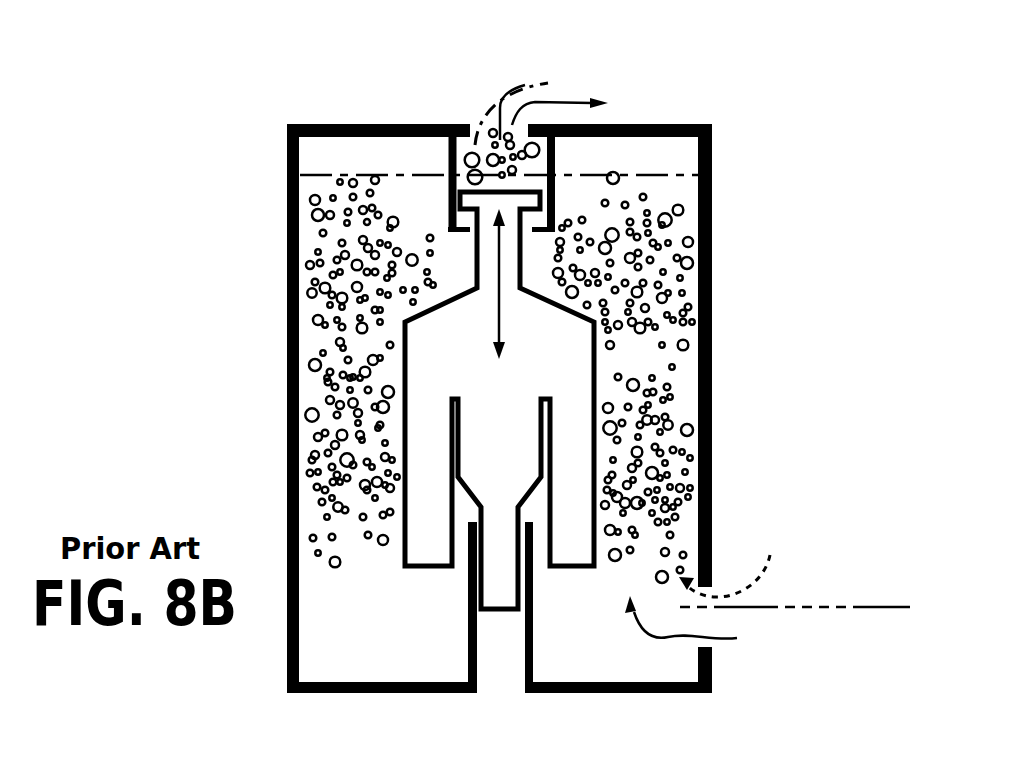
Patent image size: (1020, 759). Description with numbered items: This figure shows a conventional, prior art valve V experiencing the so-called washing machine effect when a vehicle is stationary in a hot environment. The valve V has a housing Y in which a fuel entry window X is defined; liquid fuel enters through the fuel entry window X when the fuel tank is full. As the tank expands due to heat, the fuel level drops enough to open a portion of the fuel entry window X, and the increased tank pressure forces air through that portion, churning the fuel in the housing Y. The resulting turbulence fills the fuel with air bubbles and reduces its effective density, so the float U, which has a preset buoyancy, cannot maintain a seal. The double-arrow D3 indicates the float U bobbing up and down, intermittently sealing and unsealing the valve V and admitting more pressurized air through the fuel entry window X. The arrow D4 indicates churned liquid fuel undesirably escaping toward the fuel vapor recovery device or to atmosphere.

The valve V is at (250, 262).
The housing Y is at (711, 432).
The fuel entry window X is at (703, 643).
The float U is at (582, 365).
The double-arrow D3 is at (493, 319).
The arrow D4 is at (563, 100).